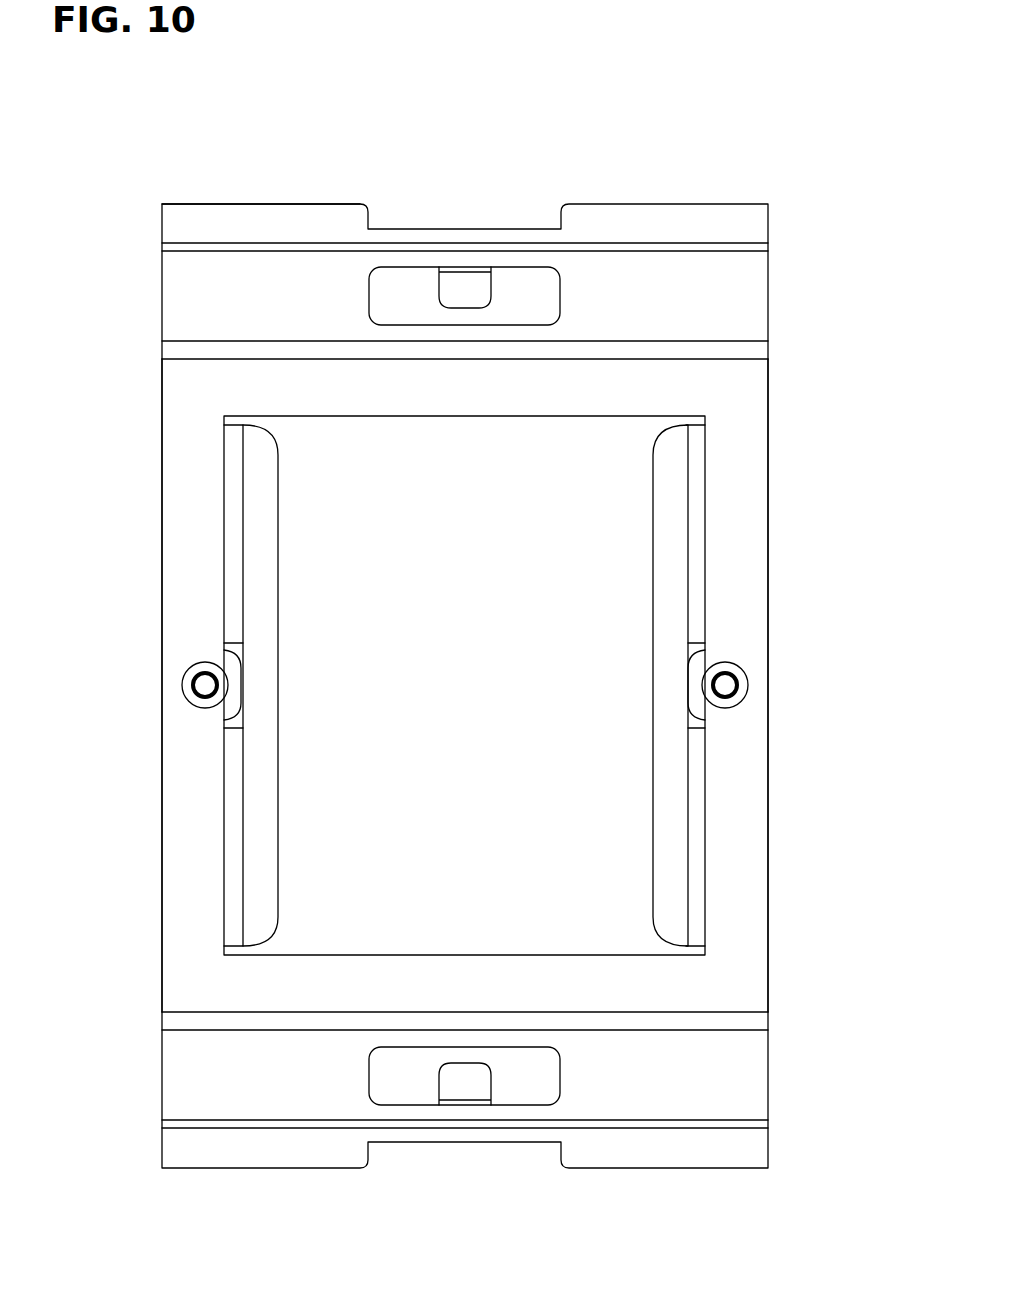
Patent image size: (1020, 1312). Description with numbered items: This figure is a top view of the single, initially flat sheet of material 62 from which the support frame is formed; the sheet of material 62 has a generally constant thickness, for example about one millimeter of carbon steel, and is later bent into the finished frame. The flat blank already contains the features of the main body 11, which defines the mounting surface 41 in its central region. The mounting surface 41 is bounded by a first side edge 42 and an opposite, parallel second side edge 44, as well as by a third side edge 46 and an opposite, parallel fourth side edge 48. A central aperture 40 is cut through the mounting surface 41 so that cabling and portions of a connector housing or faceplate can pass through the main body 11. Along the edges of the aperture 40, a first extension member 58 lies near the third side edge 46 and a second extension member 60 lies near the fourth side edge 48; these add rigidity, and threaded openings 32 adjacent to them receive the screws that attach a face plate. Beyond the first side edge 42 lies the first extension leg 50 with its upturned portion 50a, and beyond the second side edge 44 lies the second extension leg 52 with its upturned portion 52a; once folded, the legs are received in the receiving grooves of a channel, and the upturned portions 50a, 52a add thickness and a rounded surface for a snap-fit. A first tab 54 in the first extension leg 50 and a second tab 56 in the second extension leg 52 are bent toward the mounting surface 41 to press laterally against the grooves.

The main body 11 is at (765, 203).
The sheet of material 62 is at (160, 203).
The upturned portion 52a is at (752, 223).
The second extension leg 52 is at (742, 303).
The second side edge 44 is at (172, 351).
The second tab 56 is at (472, 287).
The central aperture 40 is at (619, 896).
The second extension member 60 is at (265, 815).
The first extension member 58 is at (664, 742).
The threaded openings 32 is at (205, 685).
The fourth side edge 48 is at (160, 637).
The third side edge 46 is at (772, 648).
The mounting surface 41 is at (740, 977).
The first side edge 42 is at (173, 1022).
The first extension leg 50 is at (735, 1077).
The upturned portion 50a is at (745, 1147).
The first tab 54 is at (460, 1083).